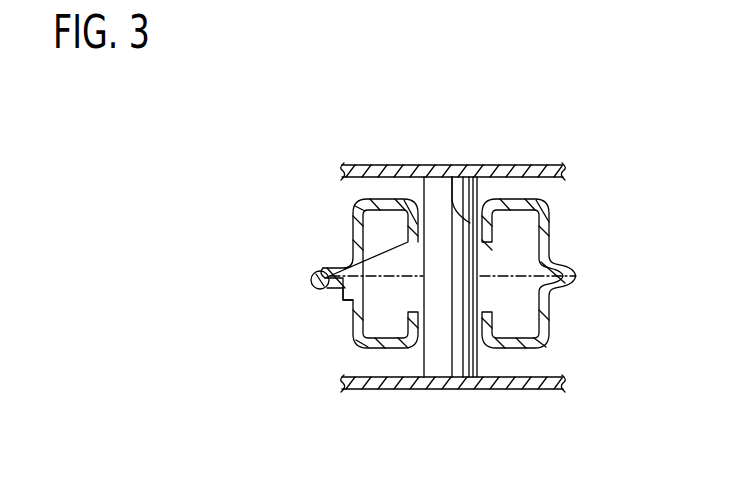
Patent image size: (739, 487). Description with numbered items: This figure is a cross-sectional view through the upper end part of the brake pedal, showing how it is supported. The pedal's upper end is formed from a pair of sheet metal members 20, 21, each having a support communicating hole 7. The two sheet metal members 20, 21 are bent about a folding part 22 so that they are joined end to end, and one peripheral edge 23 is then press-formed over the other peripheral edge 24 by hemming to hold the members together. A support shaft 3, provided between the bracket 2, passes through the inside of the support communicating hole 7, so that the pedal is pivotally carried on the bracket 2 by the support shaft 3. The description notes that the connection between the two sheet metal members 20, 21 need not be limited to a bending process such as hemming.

The bracket 2 is at (527, 166).
The support shaft 3 is at (446, 364).
The support communicating hole 7 is at (454, 178).
The sheet metal member 20 is at (354, 206).
The sheet metal member 21 is at (357, 332).
The folding part 22 is at (578, 275).
The peripheral edge 23 is at (324, 300).
The peripheral edge 24 is at (312, 272).